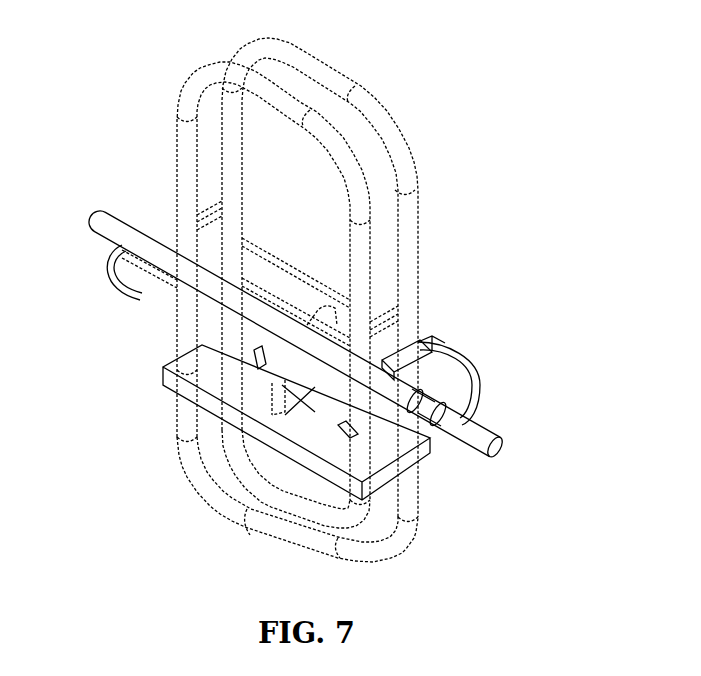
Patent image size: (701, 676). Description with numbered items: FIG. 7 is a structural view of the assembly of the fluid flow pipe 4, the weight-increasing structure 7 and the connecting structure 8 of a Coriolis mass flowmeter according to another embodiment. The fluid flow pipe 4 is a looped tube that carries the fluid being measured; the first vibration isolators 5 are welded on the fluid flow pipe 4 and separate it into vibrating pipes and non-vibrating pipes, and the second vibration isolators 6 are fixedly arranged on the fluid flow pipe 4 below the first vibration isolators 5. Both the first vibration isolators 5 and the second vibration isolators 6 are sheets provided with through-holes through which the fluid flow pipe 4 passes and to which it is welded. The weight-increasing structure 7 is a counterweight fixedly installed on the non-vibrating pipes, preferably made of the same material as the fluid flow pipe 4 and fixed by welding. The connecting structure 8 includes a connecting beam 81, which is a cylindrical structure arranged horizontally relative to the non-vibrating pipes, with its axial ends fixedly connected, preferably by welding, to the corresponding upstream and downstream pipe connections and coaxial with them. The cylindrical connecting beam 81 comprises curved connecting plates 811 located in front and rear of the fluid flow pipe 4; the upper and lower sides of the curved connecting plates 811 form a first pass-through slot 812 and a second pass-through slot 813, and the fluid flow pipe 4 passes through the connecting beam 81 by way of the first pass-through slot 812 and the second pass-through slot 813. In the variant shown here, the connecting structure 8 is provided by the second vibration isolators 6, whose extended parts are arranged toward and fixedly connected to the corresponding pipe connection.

The fluid flow pipe 4 is at (397, 147).
The first vibration isolators 5 is at (392, 365).
The second vibration isolators 6 is at (423, 388).
The weight-increasing structure 7 is at (265, 393).
The connecting structure 8 is at (442, 350).
The connecting beam 81 is at (163, 290).
The curved connecting plates 811 is at (463, 393).
The first pass-through slot 812 is at (275, 292).
The second pass-through slot 813 is at (442, 443).